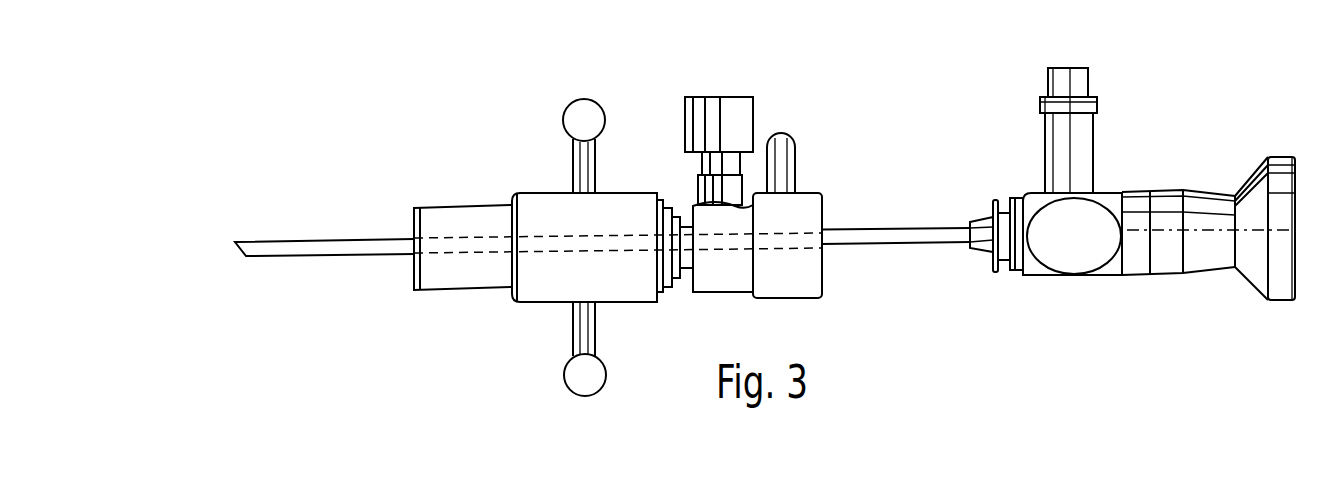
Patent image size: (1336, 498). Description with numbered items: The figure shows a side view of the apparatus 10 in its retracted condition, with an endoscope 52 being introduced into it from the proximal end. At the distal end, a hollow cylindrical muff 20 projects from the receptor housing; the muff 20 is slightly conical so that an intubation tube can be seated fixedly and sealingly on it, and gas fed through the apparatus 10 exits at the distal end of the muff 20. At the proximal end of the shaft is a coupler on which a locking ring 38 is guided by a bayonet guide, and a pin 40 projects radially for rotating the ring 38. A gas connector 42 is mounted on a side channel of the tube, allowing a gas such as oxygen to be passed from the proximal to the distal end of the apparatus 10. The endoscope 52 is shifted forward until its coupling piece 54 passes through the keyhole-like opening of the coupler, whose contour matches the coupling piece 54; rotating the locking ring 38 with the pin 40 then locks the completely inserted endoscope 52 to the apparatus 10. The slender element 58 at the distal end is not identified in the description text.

The apparatus 10 is at (525, 331).
The muff 20 is at (462, 225).
The locking ring 38 is at (808, 203).
The pin 40 is at (787, 157).
The gas connector 42 is at (740, 112).
The endoscope 52 is at (1160, 146).
The coupling piece 54 is at (995, 265).
The needle tube 58 is at (328, 250).